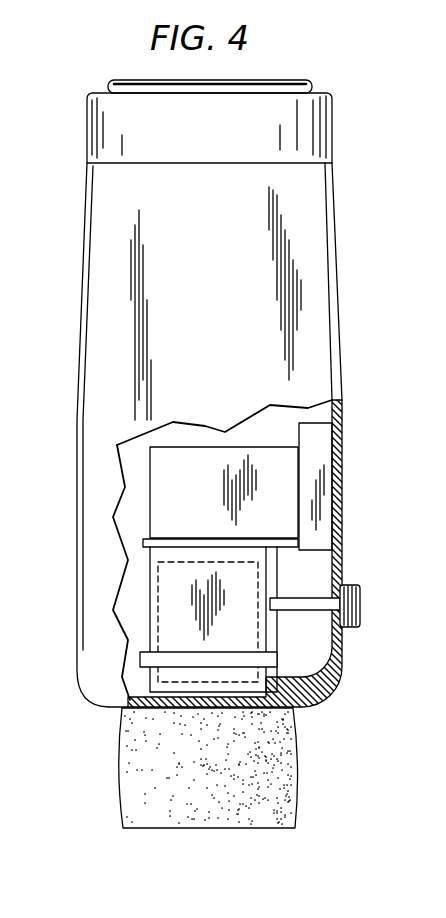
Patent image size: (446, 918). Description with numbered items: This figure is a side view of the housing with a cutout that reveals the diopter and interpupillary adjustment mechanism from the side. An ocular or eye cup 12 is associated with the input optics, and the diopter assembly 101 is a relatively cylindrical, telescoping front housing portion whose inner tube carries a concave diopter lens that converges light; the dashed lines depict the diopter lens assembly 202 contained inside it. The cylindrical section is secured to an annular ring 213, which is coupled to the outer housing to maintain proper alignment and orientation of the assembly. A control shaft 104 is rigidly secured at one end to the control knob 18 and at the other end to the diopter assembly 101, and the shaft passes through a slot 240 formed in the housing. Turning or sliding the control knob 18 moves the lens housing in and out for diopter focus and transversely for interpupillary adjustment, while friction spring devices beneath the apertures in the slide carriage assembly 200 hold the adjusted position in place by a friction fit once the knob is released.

The eye cup 12 is at (273, 767).
The control knob 18 is at (360, 605).
The diopter assembly 101 is at (108, 705).
The control shaft 104 is at (315, 584).
The slide carriage assembly 200 is at (322, 453).
The diopter lens assembly 202 is at (153, 582).
The annular ring 213 is at (147, 661).
The slot 240 is at (357, 593).